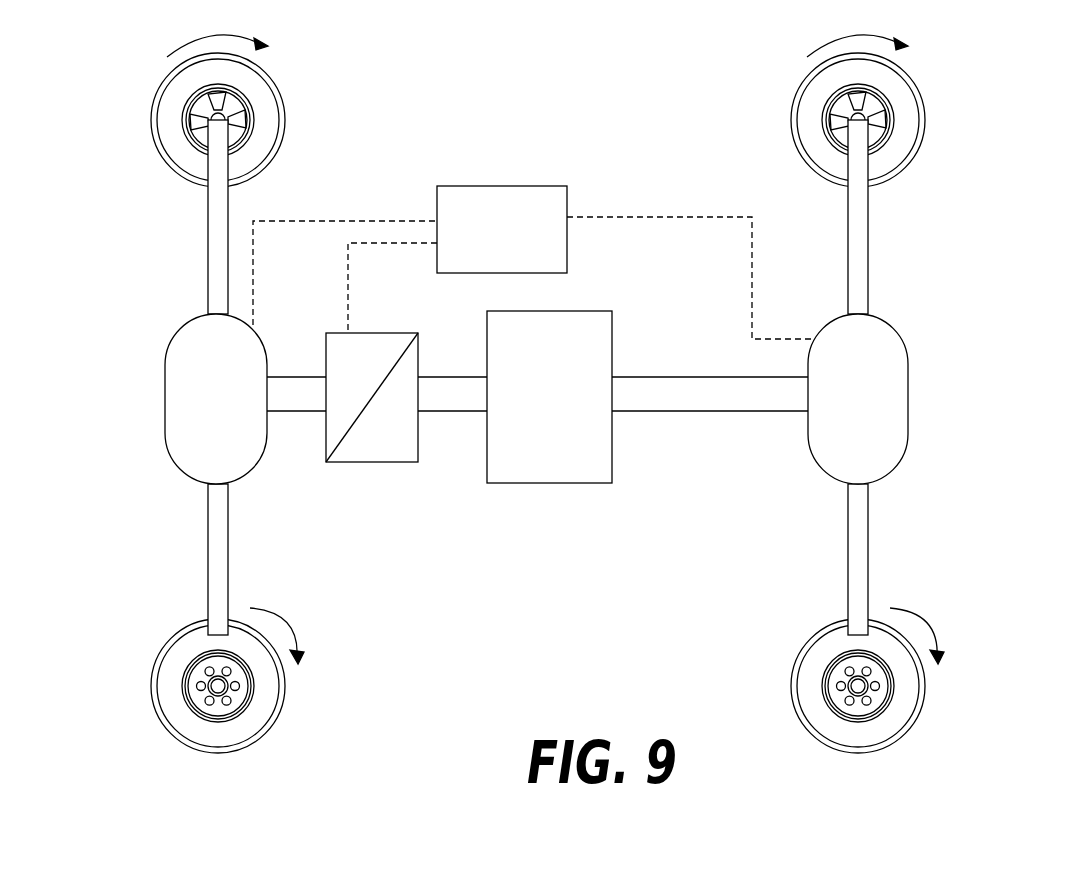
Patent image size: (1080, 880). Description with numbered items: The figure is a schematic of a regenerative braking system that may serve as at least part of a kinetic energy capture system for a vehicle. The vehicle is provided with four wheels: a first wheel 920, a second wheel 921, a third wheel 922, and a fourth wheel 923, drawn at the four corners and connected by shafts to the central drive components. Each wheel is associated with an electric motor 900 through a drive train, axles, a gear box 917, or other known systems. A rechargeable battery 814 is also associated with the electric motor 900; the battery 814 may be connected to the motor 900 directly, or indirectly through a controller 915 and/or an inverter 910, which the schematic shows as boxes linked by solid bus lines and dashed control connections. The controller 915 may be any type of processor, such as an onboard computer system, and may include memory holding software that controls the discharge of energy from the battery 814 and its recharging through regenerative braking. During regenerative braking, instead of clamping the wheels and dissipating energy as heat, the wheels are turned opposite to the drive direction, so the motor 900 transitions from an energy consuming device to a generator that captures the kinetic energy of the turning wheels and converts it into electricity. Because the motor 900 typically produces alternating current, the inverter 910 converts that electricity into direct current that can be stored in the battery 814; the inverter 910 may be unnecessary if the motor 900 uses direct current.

The electric motor 900 is at (178, 410).
The gear box 917 is at (908, 408).
The inverter 910 is at (397, 333).
The rechargeable battery 814 is at (606, 311).
The controller 915 is at (537, 186).
The first wheel 920 is at (270, 92).
The second wheel 921 is at (917, 82).
The third wheel 922 is at (925, 698).
The fourth wheel 923 is at (285, 690).